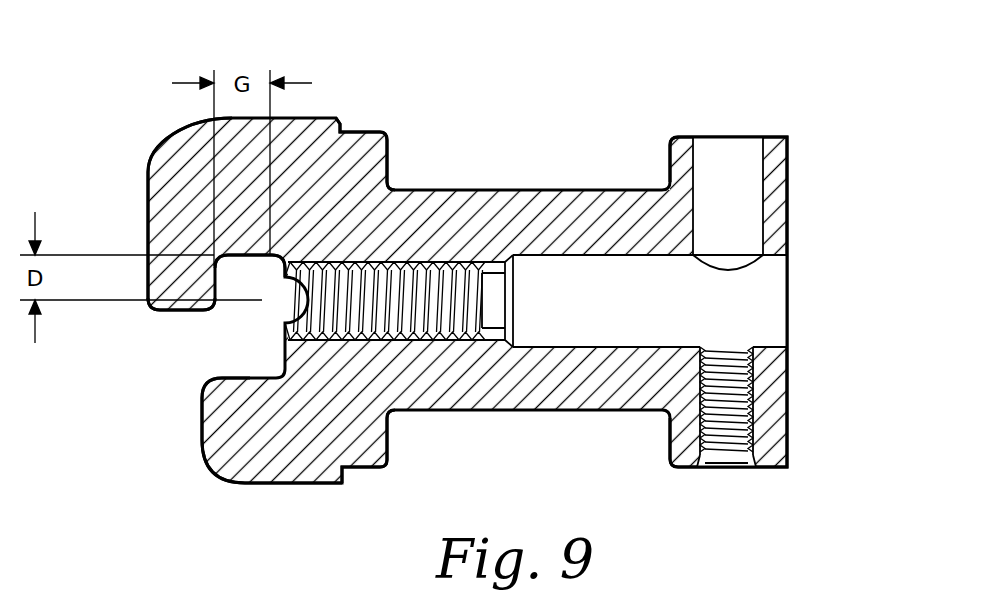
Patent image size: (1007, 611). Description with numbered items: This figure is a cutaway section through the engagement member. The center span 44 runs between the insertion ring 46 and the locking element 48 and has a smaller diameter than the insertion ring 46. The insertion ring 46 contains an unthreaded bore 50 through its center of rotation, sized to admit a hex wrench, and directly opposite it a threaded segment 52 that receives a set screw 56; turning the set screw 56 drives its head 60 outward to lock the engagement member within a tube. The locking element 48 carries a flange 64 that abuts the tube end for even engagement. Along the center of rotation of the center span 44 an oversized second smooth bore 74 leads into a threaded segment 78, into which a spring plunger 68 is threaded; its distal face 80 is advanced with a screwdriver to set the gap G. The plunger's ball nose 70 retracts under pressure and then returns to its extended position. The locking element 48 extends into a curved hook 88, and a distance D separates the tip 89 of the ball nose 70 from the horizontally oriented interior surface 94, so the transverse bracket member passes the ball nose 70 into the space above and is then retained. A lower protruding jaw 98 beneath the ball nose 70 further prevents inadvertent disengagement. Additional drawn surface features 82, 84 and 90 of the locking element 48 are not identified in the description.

The center span 44 is at (528, 190).
The insertion ring 46 is at (773, 182).
The locking element 48 is at (327, 118).
The bore 50 is at (740, 146).
The threaded segment 52 is at (679, 469).
The set screw 56 is at (740, 447).
The head of the set screw 60 is at (738, 468).
The flange 64 is at (343, 118).
The spring plunger 68 is at (362, 341).
The ball nose 70 is at (282, 320).
The second smooth bore 74 is at (737, 296).
The threaded segment 78 is at (486, 341).
The distal face 80 is at (503, 302).
The lower head upper corner 82 is at (205, 406).
The lower head bottom surface 84 is at (284, 344).
The curved hook 88 is at (147, 253).
The tip of the ball nose 89 is at (268, 306).
The head rounded top 90 is at (216, 279).
The horizontally oriented interior surface 94 is at (254, 254).
The lower protruding jaw 98 is at (221, 460).